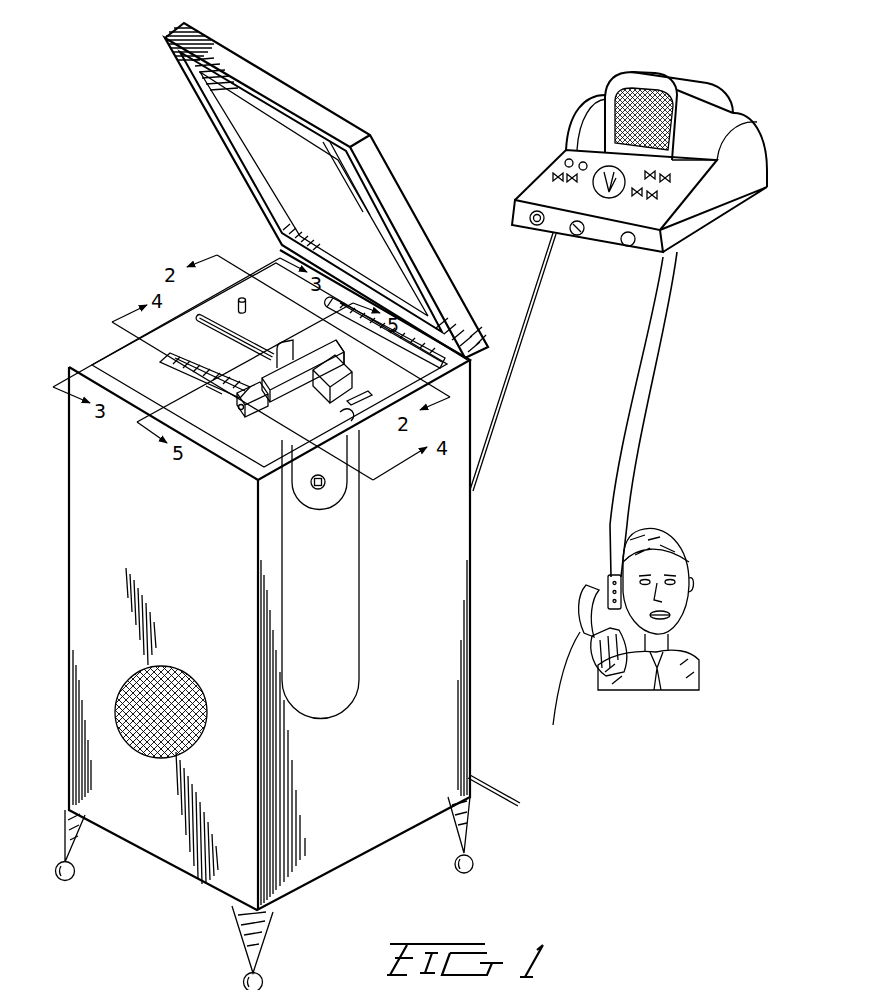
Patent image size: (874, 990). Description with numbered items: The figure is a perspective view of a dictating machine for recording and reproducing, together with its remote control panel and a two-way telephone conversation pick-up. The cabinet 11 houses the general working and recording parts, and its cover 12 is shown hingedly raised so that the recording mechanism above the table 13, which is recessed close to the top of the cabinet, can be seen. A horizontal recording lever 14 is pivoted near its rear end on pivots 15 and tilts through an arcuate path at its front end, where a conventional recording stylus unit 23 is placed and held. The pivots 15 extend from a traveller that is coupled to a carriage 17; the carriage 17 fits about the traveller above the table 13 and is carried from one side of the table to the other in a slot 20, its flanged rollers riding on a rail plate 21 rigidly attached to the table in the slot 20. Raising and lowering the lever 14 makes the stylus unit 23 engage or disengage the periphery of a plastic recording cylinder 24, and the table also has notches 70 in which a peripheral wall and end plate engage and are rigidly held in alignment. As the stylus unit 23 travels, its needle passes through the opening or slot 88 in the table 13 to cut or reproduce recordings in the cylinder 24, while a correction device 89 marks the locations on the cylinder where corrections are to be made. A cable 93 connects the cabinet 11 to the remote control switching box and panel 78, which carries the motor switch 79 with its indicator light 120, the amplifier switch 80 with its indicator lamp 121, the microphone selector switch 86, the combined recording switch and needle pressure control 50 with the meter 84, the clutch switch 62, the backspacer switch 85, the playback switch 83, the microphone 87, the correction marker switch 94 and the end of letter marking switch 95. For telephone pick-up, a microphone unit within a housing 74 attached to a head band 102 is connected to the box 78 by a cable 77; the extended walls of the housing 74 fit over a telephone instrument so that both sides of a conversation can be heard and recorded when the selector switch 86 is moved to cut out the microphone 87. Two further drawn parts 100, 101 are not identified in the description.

The cabinet 11 is at (73, 633).
The cover 12 is at (262, 68).
The table 13 is at (103, 354).
The recording lever 14 is at (291, 388).
The pivots 15 is at (345, 356).
The carriage 17 is at (353, 385).
The slot 20 is at (228, 331).
The rail plate 21 is at (245, 311).
The recording stylus unit 23 is at (246, 414).
The plastic recording cylinder 24 is at (214, 391).
The notches 70 is at (340, 412).
The opening or slot 88 is at (198, 366).
The correction device 89 is at (327, 302).
The remote control switching box and panel 78 is at (733, 122).
The microphone 87 is at (608, 108).
The meter 84 is at (595, 187).
The indicator light 120 is at (580, 164).
The indicator light 121 is at (567, 160).
The motor switch 79 is at (552, 177).
The amplifier switch 80 is at (566, 182).
The correction marker switch 94 is at (656, 174).
The end of letter marking switch 95 is at (671, 179).
The backspacer switch 85 is at (658, 196).
The playback switch 83 is at (637, 197).
The clutch switch 62 is at (530, 220).
The combined recording switch and needle pressure control 50 is at (576, 235).
The microphone selector switch 86 is at (628, 246).
The cable 93 is at (502, 397).
The cable 77 is at (630, 452).
The housing 74 is at (608, 578).
The head band 102 is at (662, 599).
The handset 100 is at (580, 596).
The handset cord 101 is at (561, 659).